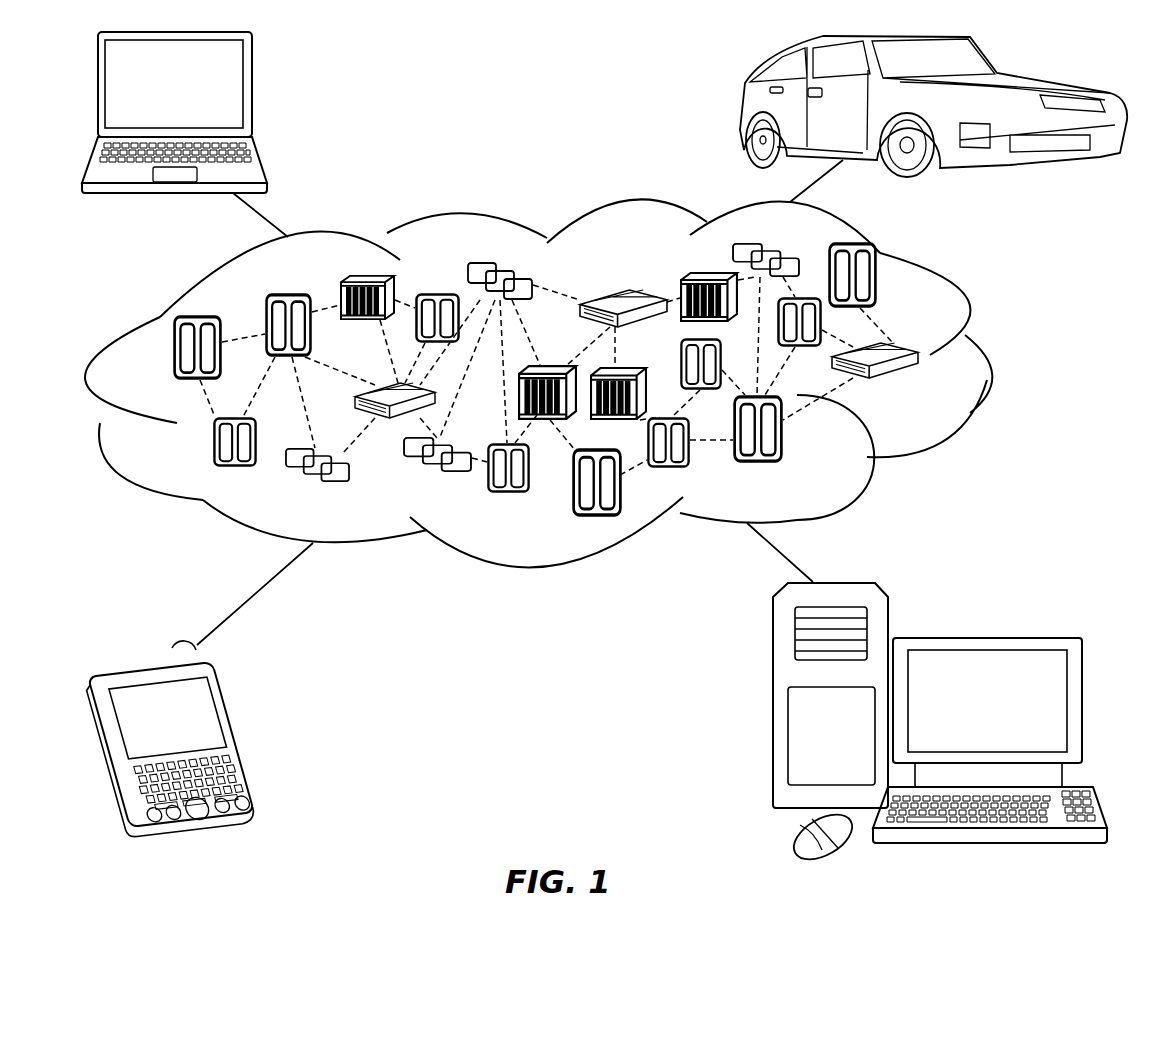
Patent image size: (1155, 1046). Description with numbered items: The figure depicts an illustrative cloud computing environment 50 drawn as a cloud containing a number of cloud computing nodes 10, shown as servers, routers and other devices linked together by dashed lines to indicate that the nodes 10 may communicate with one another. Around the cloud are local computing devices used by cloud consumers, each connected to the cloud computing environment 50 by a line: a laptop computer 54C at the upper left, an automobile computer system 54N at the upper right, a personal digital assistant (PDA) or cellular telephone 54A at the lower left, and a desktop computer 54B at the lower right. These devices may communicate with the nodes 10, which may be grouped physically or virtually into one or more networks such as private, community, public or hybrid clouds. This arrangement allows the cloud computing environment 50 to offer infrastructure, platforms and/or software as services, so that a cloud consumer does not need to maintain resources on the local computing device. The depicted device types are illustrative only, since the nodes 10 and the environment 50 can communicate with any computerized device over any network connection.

The cloud computing node 10 is at (919, 388).
The cloud computing environment 50 is at (987, 357).
The personal digital assistant (PDA) or cellular telephone 54A is at (240, 730).
The desktop computer 54B is at (985, 637).
The laptop computer 54C is at (252, 93).
The automobile computer system 54N is at (743, 108).